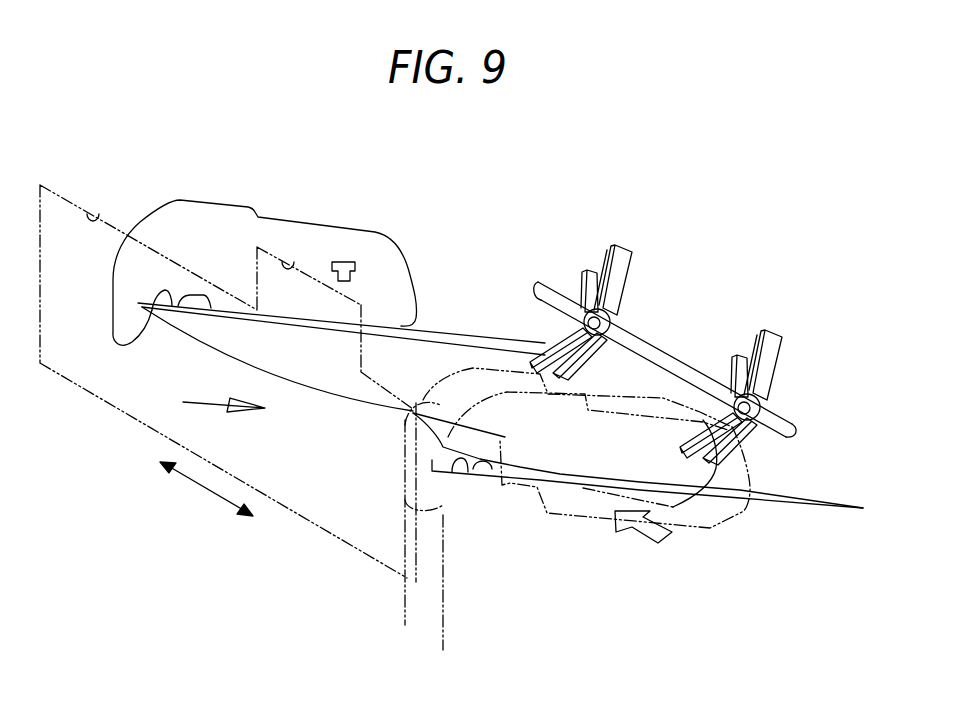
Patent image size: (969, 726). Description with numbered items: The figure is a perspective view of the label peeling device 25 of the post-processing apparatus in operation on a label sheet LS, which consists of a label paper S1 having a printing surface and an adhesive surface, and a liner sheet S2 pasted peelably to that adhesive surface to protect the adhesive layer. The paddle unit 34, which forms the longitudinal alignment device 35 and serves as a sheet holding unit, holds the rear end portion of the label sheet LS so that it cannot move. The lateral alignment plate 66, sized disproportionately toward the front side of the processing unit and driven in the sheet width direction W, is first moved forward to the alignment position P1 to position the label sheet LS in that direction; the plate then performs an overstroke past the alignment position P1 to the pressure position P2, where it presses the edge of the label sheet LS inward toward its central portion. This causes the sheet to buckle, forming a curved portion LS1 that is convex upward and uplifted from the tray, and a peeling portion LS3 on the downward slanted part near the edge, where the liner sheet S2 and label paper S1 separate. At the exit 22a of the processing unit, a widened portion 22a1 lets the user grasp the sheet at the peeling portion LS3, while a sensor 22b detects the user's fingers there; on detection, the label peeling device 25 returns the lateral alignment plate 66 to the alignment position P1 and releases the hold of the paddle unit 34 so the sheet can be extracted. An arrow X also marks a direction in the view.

The label peeling device 25 is at (473, 210).
The lateral alignment plate 66 is at (200, 215).
The exit 22a is at (92, 214).
The widened portion 22a1 is at (288, 262).
The sensor 22b is at (343, 262).
The paddle unit 34 is at (671, 355).
The longitudinal alignment device 35 is at (683, 326).
The label sheet LS is at (487, 350).
The curved portion LS1 is at (443, 515).
The peeling portion LS3 is at (437, 456).
The label paper S1 is at (414, 424).
The liner sheet S2 is at (431, 442).
The alignment position P1 is at (443, 633).
The pressure position P2 is at (405, 606).
The transport direction X is at (215, 401).
The sheet width direction W is at (206, 491).